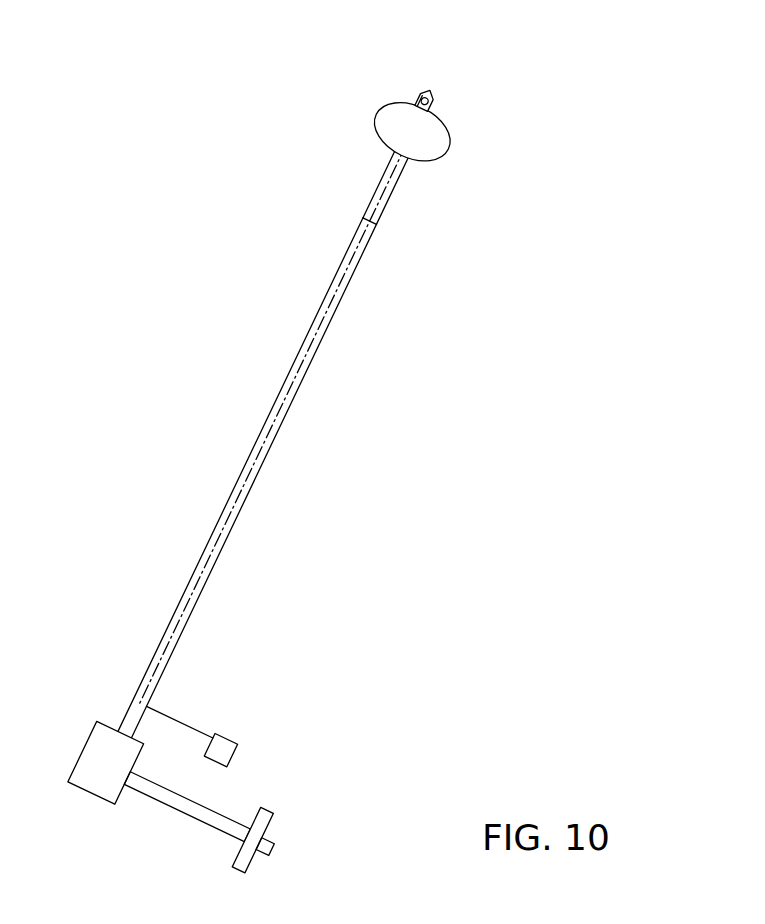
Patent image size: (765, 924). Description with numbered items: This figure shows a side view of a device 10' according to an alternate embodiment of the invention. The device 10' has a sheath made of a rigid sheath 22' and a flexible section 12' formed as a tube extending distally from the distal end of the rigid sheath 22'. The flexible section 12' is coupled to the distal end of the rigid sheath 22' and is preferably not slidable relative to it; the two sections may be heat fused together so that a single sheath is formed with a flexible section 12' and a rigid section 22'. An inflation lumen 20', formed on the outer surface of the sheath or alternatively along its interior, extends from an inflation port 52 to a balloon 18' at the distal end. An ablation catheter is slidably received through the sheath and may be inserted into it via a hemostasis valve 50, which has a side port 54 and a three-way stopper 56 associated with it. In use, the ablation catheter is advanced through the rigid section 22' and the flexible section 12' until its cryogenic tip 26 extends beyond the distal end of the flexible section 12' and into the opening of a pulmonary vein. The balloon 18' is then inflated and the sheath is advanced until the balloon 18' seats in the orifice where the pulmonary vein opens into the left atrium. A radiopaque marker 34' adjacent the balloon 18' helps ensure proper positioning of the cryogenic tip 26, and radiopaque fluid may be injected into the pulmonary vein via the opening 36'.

The device 10' is at (308, 449).
The flexible section 12' is at (353, 170).
The balloon 18' is at (462, 134).
The inflation lumen 20' is at (273, 424).
The rigid sheath 22' is at (247, 478).
The cryogenic tip 26 is at (430, 92).
The radiopaque marker 34' is at (482, 100).
The opening 36' is at (377, 63).
The hemostasis valve 50 is at (100, 805).
The sensor 52 is at (233, 740).
The side port 54 is at (227, 812).
The 3-way stopper 56 is at (266, 832).